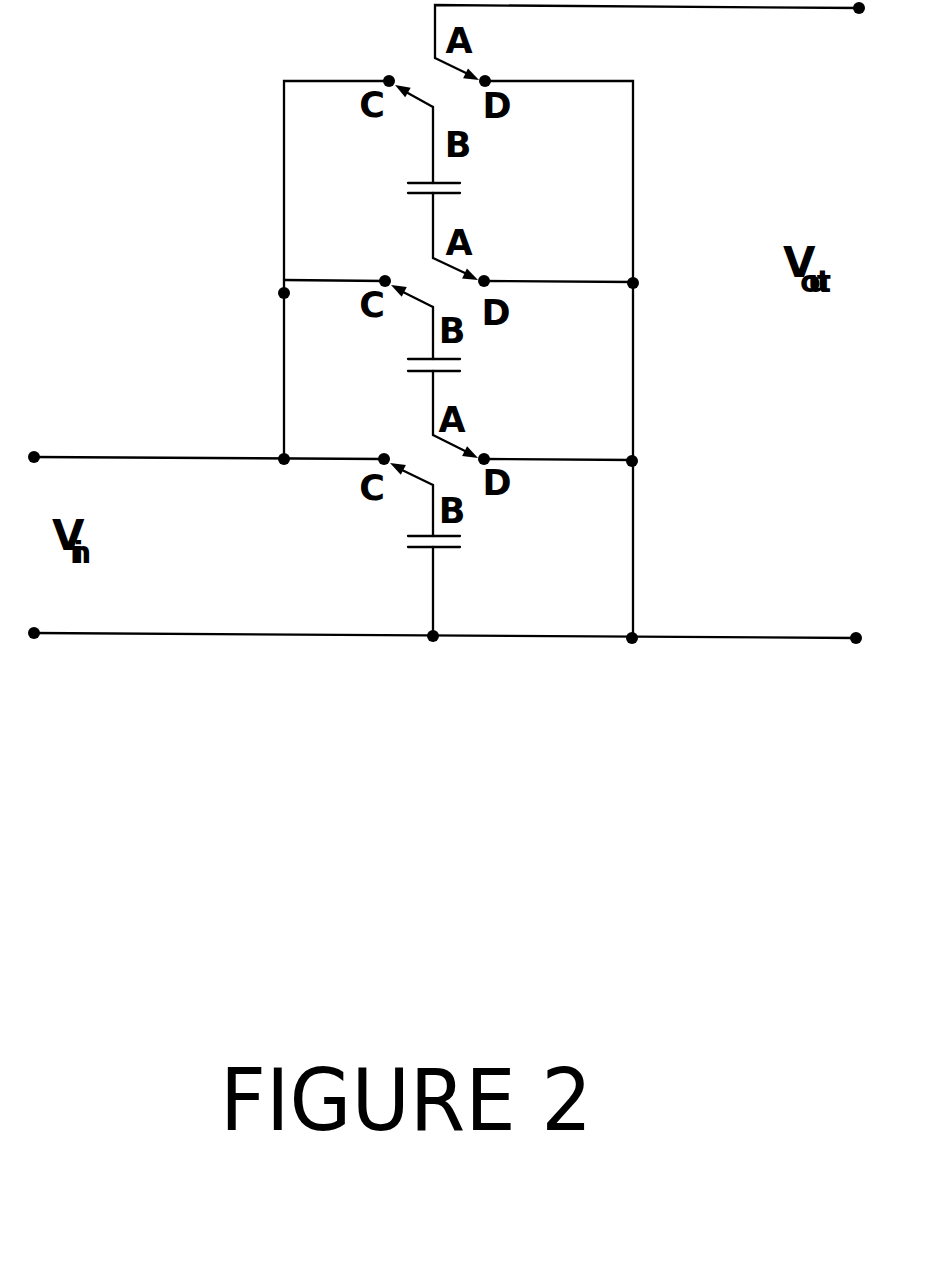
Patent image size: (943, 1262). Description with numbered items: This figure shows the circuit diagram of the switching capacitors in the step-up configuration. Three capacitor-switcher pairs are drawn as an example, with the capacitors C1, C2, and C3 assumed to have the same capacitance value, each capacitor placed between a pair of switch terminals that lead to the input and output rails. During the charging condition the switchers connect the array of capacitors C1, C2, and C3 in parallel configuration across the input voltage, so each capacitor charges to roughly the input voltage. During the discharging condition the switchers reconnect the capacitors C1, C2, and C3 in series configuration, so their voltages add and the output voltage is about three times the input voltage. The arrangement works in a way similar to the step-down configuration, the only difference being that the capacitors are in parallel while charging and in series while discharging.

The capacitor C1 is at (465, 182).
The capacitor C2 is at (465, 371).
The capacitor C3 is at (463, 560).